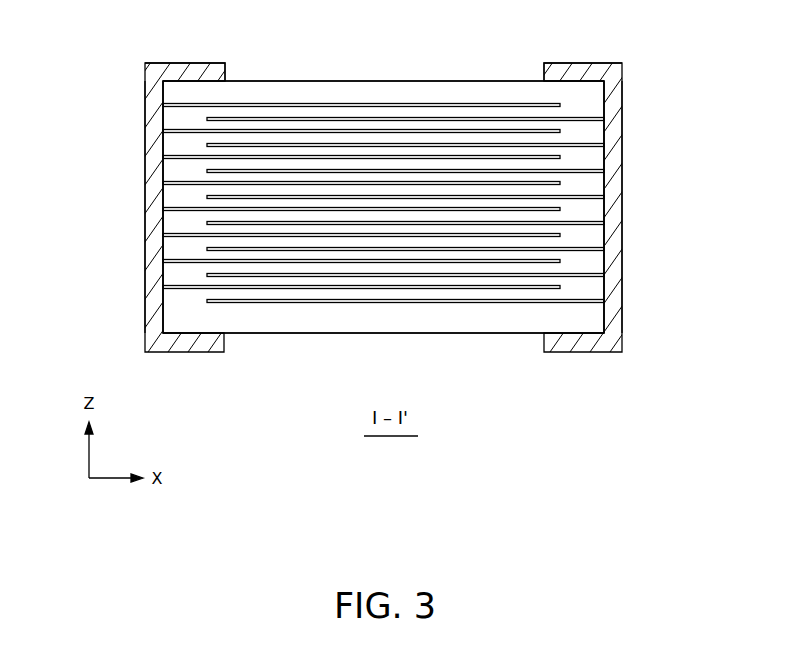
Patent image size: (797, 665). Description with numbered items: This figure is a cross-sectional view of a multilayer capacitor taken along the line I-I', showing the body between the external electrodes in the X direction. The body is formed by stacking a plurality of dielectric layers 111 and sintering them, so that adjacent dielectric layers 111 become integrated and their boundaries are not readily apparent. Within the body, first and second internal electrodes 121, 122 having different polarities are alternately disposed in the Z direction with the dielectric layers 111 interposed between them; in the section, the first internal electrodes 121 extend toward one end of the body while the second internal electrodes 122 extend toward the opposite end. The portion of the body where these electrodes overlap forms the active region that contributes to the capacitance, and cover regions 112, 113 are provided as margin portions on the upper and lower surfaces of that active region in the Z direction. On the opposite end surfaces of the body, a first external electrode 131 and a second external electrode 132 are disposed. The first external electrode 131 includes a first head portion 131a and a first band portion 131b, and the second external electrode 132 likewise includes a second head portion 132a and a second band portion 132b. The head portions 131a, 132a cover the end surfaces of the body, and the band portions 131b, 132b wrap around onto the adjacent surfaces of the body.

The dielectric layers 111 is at (595, 209).
The cover region 112 is at (370, 88).
The cover region 113 is at (478, 322).
The first internal electrode 121 is at (303, 104).
The second internal electrode 122 is at (463, 117).
The first external electrode 131 is at (208, 205).
The first head portion 131a is at (157, 125).
The first band portion 131b is at (200, 70).
The second external electrode 132 is at (570, 207).
The second head portion 132a is at (613, 125).
The second band portion 132b is at (570, 64).